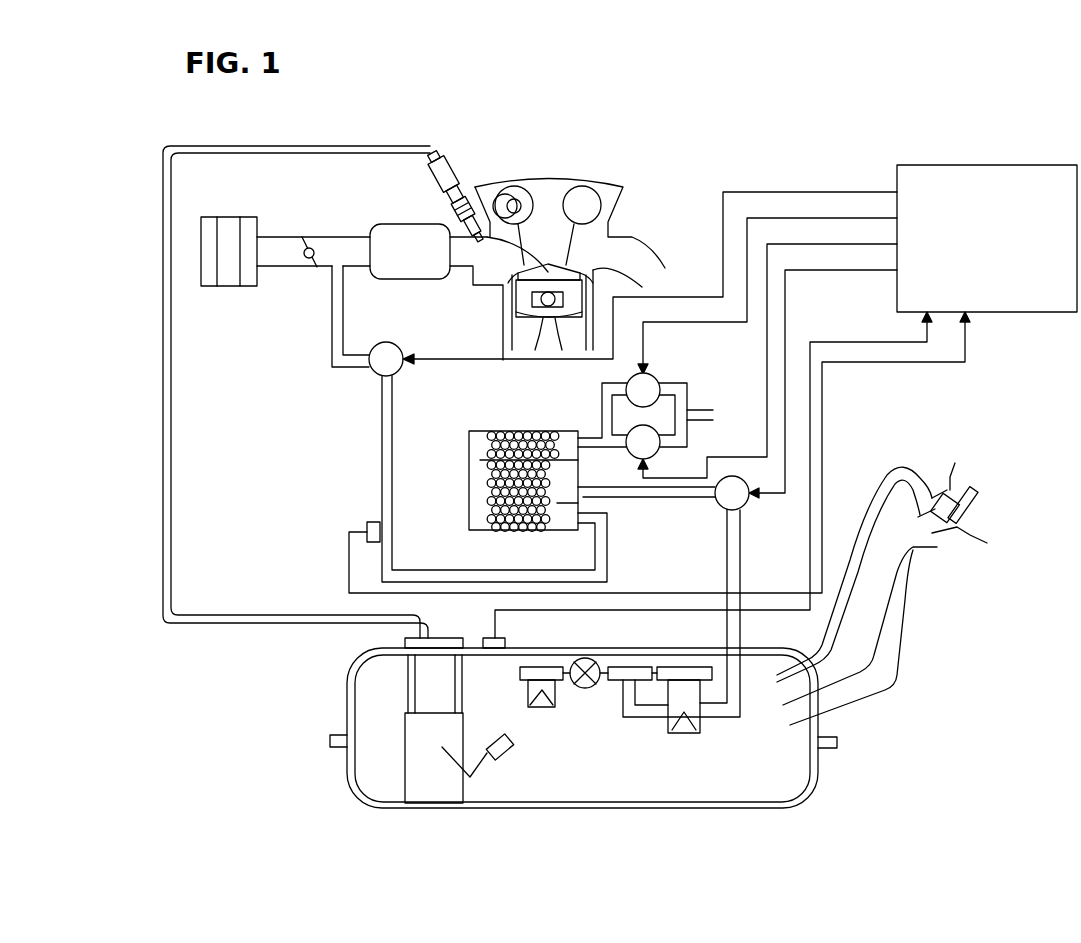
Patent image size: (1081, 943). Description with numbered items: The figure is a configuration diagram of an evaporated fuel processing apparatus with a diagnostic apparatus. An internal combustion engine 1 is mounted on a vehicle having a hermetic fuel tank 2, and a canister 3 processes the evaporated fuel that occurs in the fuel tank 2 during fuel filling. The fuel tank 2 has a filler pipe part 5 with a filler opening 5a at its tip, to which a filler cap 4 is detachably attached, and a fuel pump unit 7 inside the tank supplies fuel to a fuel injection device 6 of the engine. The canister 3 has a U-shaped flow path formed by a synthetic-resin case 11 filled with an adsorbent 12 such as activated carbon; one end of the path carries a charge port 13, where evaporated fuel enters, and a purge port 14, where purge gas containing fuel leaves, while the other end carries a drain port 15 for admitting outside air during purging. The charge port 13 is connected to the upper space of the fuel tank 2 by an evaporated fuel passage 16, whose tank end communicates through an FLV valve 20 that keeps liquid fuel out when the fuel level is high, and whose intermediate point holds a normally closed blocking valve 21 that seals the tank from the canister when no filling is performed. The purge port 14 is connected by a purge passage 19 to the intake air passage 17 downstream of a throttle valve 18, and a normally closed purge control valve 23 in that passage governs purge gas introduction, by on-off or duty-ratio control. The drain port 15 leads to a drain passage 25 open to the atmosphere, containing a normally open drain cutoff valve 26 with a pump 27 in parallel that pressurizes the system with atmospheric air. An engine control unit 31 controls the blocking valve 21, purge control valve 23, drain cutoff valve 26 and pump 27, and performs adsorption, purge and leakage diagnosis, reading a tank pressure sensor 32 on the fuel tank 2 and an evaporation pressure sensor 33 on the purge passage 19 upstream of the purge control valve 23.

The internal combustion engine 1 is at (605, 167).
The fuel tank 2 is at (740, 808).
The canister 3 is at (485, 432).
The filler cap 4 is at (987, 500).
The filler pipe part 5 is at (887, 613).
The filler opening 5a is at (933, 530).
The fuel injection device 6 is at (458, 183).
The fuel pump unit 7 is at (413, 755).
The case 11 is at (467, 467).
The adsorbent 12 is at (498, 487).
The charge port 13 is at (585, 495).
The purge port 14 is at (588, 525).
The drain port 15 is at (590, 437).
The evaporated fuel passage 16 is at (745, 555).
The intake air passage 17 is at (357, 245).
The throttle valve 18 is at (310, 262).
The purge passage 19 is at (333, 340).
The FLV valve 20 is at (672, 690).
The blocking valve 21 is at (725, 505).
The purge control valve 23 is at (372, 372).
The drain passage 25 is at (698, 407).
The drain cutoff valve 26 is at (660, 456).
The pump 27 is at (657, 380).
The engine control unit 31 is at (952, 172).
The tank pressure sensor 32 is at (490, 637).
The evaporation pressure sensor 33 is at (368, 528).